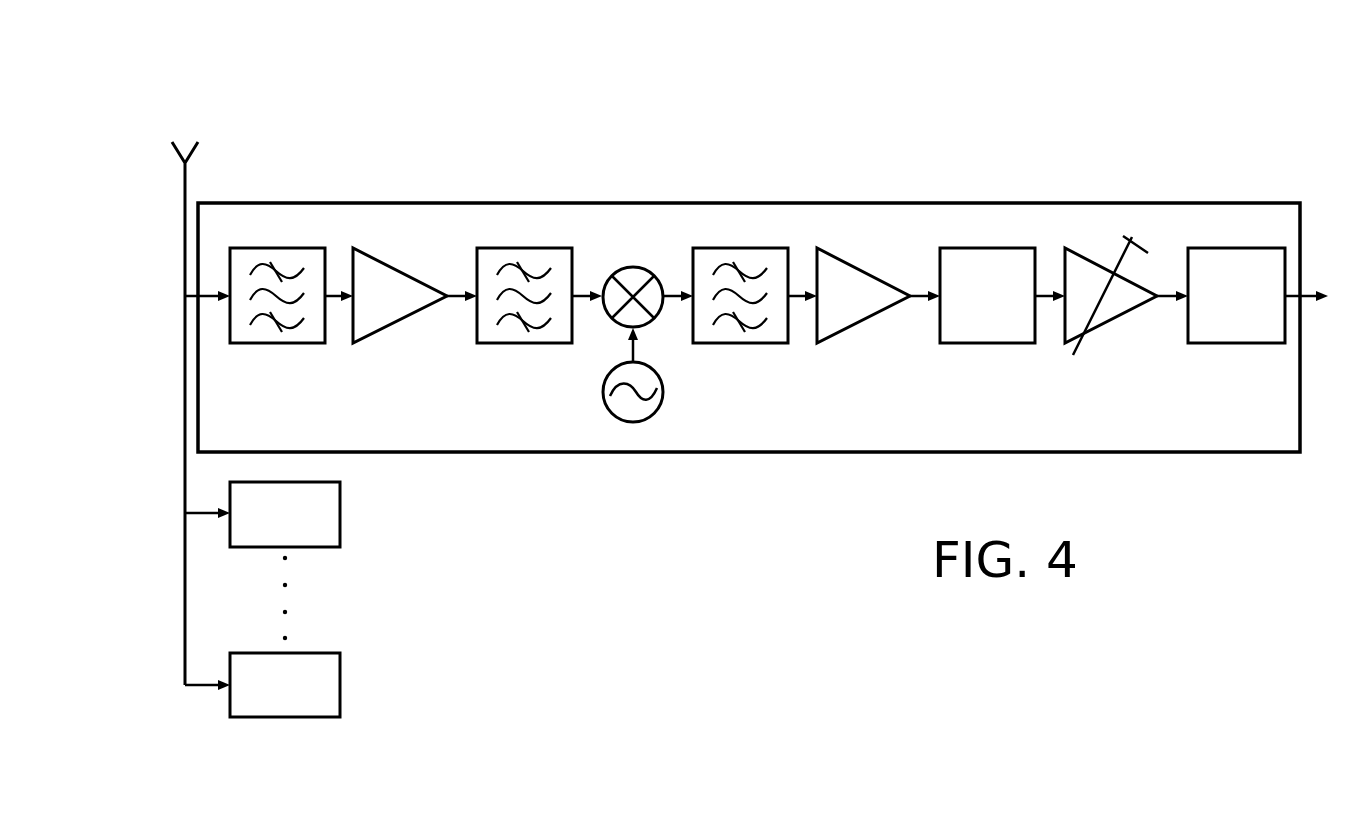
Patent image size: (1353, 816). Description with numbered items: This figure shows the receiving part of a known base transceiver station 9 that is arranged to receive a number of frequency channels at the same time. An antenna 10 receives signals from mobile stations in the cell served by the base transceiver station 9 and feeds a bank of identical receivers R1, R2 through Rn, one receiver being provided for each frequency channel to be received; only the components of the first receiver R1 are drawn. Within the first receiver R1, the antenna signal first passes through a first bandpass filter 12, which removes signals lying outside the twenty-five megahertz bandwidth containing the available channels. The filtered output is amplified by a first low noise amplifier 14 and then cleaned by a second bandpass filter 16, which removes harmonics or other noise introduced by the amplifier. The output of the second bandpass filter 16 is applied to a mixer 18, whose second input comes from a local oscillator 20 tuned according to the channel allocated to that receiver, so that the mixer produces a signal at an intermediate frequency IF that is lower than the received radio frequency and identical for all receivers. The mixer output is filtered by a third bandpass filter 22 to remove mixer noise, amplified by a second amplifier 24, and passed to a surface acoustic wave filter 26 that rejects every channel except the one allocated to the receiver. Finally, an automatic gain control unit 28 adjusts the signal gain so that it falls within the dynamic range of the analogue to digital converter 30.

The base transceiver station 9 is at (749, 297).
The antenna 10 is at (187, 183).
The first bandpass filter 12 is at (290, 343).
The first low noise amplifier 14 is at (420, 318).
The second bandpass filter 16 is at (518, 343).
The mixer 18 is at (618, 272).
The local oscillator 20 is at (603, 393).
The third bandpass filter 22 is at (733, 343).
The second amplifier 24 is at (884, 316).
The surface acoustic wave filter 26 is at (978, 343).
The automatic gain control unit 28 is at (1130, 318).
The analogue to digital converter 30 is at (1250, 343).
The first receiver R1 is at (662, 203).
The second receiver R2 is at (340, 511).
The Nth receiver Rn is at (340, 681).
The intermediate frequency IF is at (675, 295).